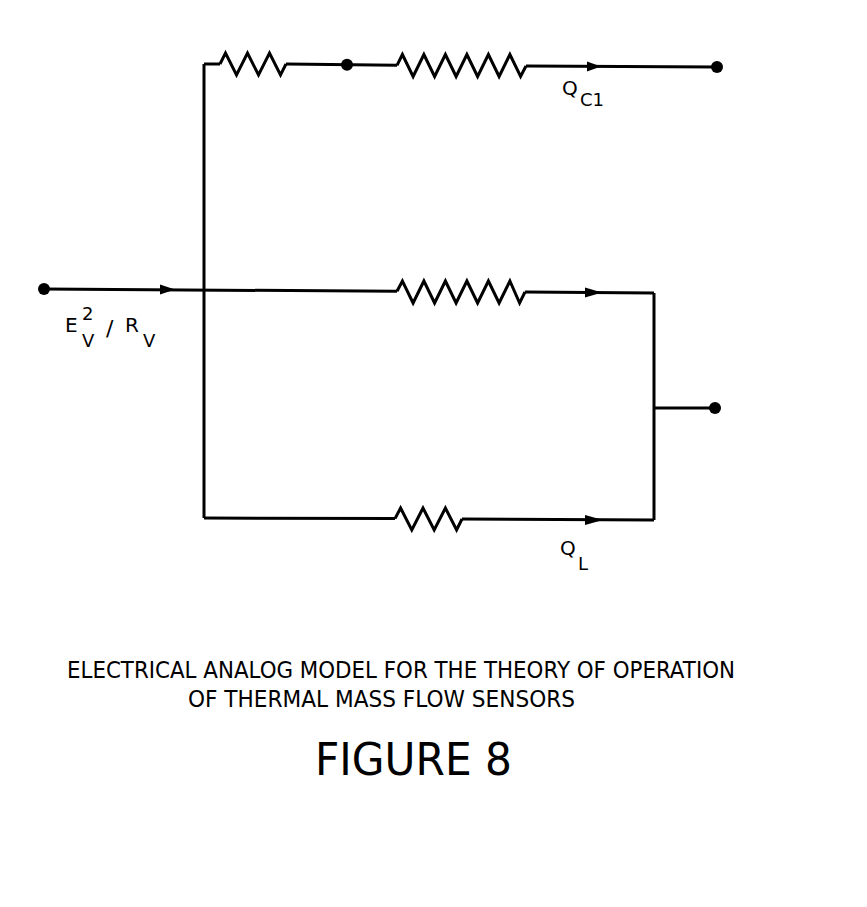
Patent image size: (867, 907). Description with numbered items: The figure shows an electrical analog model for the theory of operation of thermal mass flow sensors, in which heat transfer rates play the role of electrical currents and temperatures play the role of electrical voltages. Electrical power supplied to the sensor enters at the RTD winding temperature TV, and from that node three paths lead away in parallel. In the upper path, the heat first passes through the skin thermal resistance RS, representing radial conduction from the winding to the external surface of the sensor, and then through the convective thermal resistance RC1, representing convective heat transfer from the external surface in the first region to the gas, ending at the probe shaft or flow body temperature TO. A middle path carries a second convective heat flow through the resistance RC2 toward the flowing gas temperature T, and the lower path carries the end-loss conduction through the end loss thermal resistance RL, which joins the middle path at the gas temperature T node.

The skin thermal resistance RS is at (253, 87).
The convective thermal resistance RC1 is at (461, 87).
The conduction resistance 2 RC2 is at (500, 307).
The end loss thermal resistance RL is at (428, 540).
The temperature of the probe shaft or flow body TO is at (726, 35).
The temperature of the RTD winding TV is at (36, 252).
The temperature of the flowing gas T is at (715, 385).